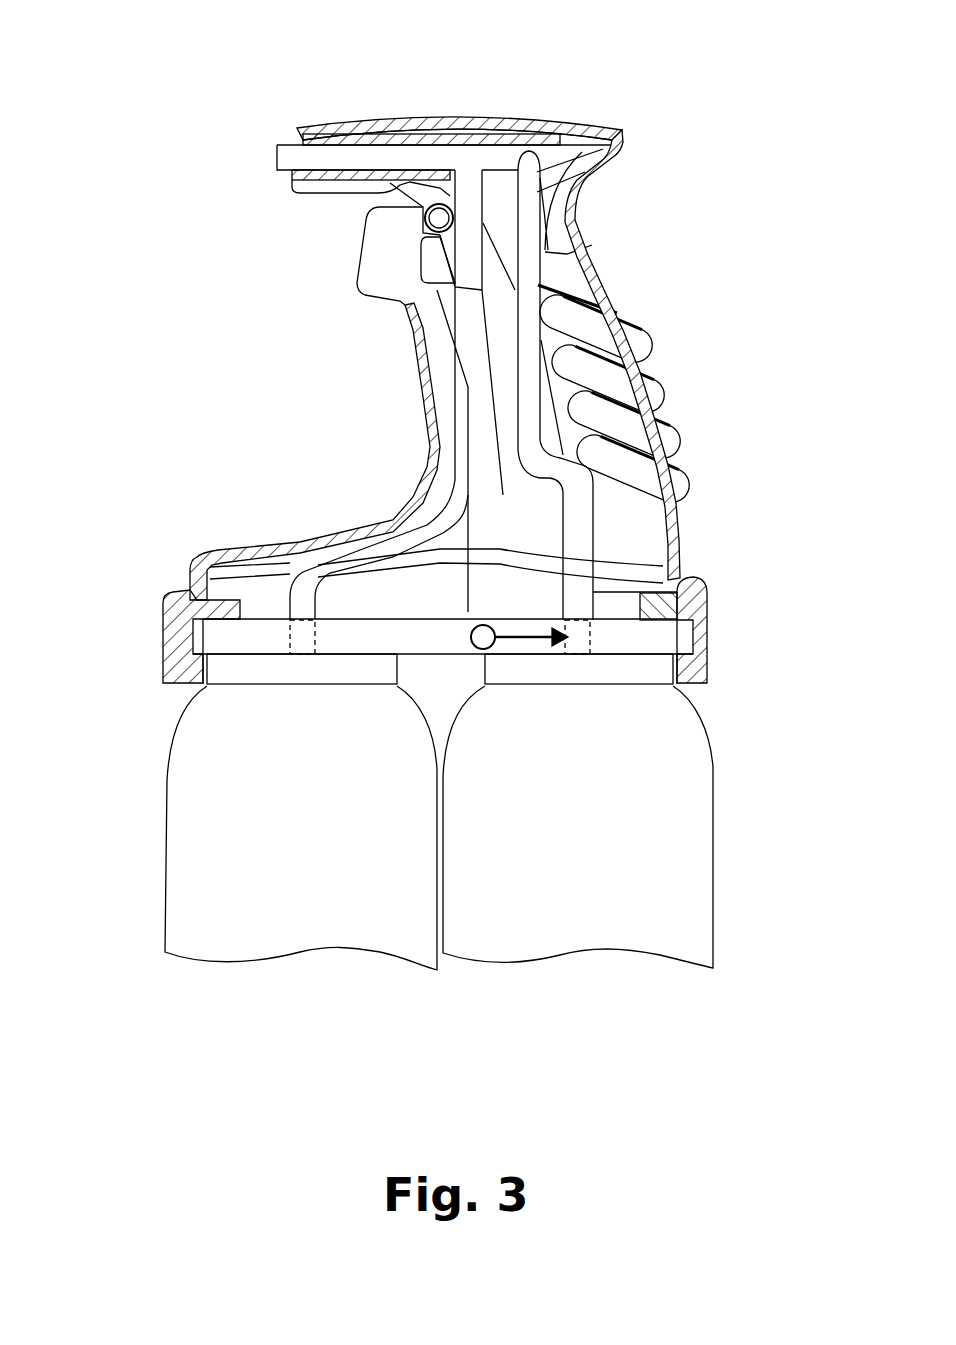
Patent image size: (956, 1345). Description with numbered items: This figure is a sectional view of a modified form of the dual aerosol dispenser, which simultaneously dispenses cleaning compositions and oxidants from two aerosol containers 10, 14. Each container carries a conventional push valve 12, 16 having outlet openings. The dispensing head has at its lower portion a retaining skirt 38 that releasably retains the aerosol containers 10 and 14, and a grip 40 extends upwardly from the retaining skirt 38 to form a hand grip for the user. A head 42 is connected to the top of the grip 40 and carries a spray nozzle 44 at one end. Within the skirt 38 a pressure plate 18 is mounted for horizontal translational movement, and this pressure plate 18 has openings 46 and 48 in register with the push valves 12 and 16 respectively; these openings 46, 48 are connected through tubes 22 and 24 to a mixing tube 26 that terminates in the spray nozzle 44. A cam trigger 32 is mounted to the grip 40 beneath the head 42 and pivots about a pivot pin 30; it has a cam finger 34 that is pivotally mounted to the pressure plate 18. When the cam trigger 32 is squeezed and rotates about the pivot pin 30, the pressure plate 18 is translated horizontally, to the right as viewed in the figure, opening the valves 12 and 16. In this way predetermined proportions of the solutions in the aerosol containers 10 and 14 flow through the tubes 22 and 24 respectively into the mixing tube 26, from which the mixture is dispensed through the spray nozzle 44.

The aerosol container 10 is at (187, 762).
The push valve 12 is at (590, 646).
The aerosol container 14 is at (680, 772).
The push valve 16 is at (290, 642).
The pressure plate 18 is at (660, 578).
The tube 22 is at (523, 273).
The tube 24 is at (467, 207).
The mixing tube 26 is at (355, 160).
The pivot pin 30 is at (423, 215).
The cam trigger 32 is at (358, 288).
The cam finger 34 is at (478, 612).
The retaining skirt 38 is at (708, 607).
The grip 40 is at (623, 313).
The head 42 is at (482, 117).
The spray nozzle 44 is at (270, 146).
The opening 46 is at (623, 608).
The opening 48 is at (288, 619).